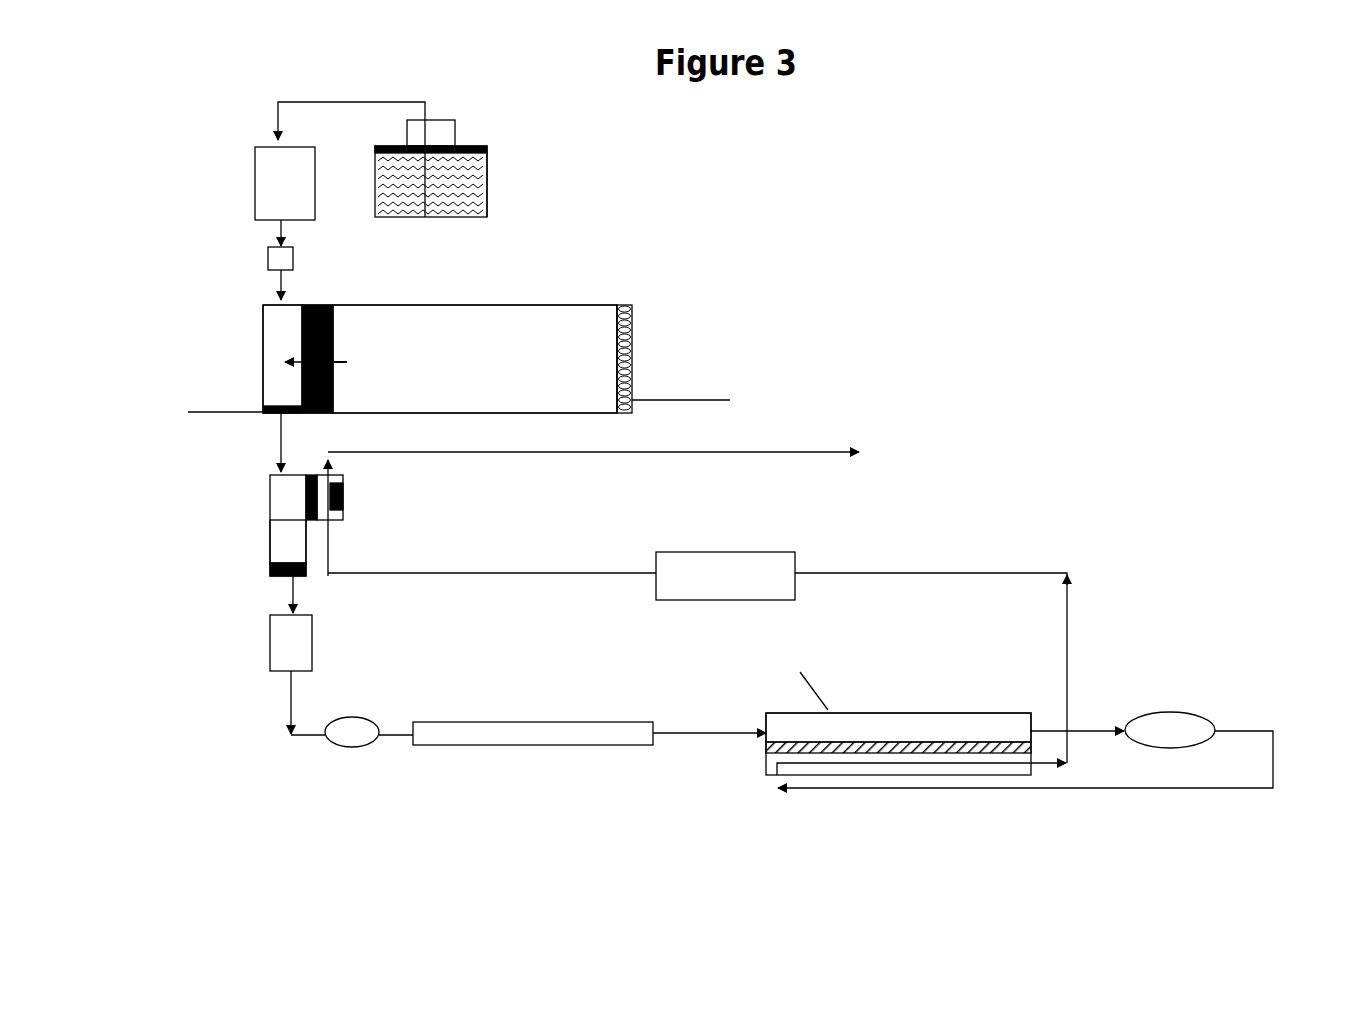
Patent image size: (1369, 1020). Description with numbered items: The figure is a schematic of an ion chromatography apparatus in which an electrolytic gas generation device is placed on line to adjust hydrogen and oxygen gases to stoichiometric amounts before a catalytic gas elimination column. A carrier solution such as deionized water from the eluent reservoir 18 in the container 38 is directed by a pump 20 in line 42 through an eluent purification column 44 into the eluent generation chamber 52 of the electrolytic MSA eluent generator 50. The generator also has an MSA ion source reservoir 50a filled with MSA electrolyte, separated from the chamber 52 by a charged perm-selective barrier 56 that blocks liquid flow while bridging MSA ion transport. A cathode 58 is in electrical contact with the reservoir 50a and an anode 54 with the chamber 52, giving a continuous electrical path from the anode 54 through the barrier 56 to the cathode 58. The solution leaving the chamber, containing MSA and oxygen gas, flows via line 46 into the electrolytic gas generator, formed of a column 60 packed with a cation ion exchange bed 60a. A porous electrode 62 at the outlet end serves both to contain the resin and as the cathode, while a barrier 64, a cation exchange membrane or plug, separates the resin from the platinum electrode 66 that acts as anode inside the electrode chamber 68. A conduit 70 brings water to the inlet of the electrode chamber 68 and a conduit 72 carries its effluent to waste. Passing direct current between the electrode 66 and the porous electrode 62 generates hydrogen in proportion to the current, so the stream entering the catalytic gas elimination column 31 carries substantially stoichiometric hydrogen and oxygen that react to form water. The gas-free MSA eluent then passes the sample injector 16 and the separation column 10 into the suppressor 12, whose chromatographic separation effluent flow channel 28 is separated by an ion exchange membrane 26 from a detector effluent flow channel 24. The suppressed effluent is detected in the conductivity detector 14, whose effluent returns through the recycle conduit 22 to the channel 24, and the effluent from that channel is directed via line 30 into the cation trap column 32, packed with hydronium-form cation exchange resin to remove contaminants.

The separation column 10 is at (525, 728).
The suppressor 12 is at (766, 777).
The conductivity detector 14 is at (1175, 740).
The sample injector 16 is at (357, 740).
The eluent reservoir 18 is at (450, 170).
The pump 20 is at (270, 160).
The recycle conduit 22 is at (1273, 768).
The detector effluent flow channel 24 is at (882, 765).
The ion exchange membrane 26 is at (972, 745).
The chromatographic separation effluent flow channel 28 is at (945, 730).
The line 30 is at (955, 572).
The catalytic gas elimination column 31 is at (305, 630).
The cation trap column 32 is at (705, 555).
The container 38 is at (487, 205).
The line 42 is at (328, 101).
The eluent purification column 44 is at (280, 258).
The line 46 is at (275, 443).
The electrolytic MSA eluent generator 50 is at (438, 300).
The MSA ion source reservoir 50a is at (533, 322).
The eluent generation chamber 52 is at (280, 340).
The anode 54 is at (270, 416).
The barrier 56 is at (338, 300).
The cathode 58 is at (632, 310).
The column 60 is at (280, 487).
The cation ion exchange bed 60a is at (292, 543).
The porous electrode 62 is at (272, 580).
The barrier 64 is at (306, 475).
The electrode 66 is at (343, 497).
The electrode chamber 68 is at (343, 510).
The conduit 70 is at (448, 572).
The conduit 72 is at (725, 451).